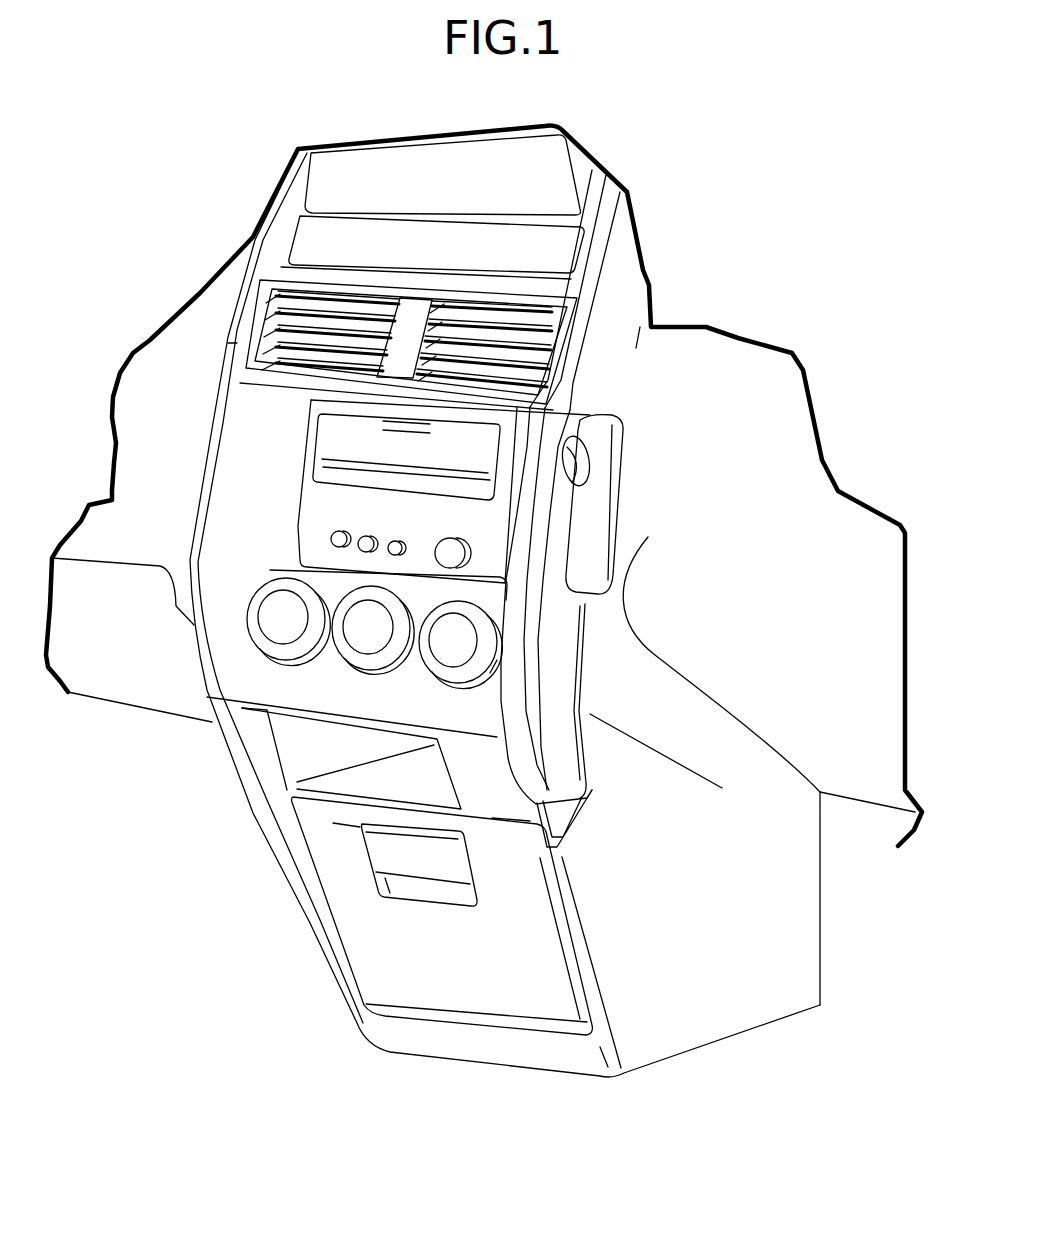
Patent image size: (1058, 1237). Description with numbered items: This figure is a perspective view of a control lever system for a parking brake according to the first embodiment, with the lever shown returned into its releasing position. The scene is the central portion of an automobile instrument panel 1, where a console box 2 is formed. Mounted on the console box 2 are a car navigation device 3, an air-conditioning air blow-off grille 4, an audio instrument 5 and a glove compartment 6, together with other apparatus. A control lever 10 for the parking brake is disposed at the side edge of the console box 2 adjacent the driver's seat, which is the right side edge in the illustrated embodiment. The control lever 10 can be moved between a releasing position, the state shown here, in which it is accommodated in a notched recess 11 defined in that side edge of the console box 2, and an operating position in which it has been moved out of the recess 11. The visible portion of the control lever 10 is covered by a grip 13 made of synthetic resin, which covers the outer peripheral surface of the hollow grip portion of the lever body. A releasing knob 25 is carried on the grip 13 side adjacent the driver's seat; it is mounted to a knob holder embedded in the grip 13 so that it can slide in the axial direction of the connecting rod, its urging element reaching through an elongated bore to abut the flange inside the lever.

The instrument panel 1 is at (772, 434).
The console box 2 is at (627, 187).
The car navigation device 3 is at (523, 160).
The air-conditioning air blow-off grille 4 is at (523, 347).
The audio instrument 5 is at (339, 512).
The glove compartment 6 is at (355, 898).
The control lever 10 is at (550, 711).
The notched recess 11 is at (599, 462).
The grip 13 is at (547, 614).
The releasing knob 25 is at (599, 413).